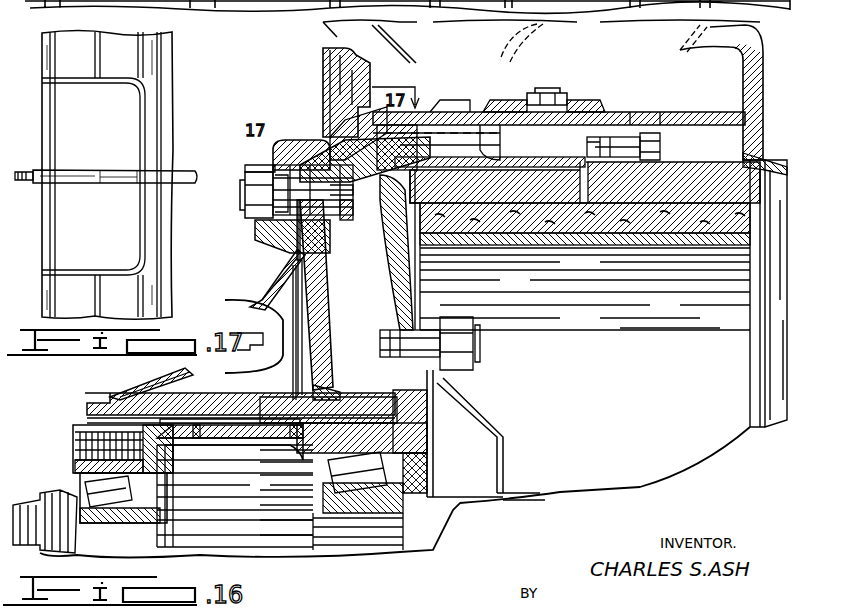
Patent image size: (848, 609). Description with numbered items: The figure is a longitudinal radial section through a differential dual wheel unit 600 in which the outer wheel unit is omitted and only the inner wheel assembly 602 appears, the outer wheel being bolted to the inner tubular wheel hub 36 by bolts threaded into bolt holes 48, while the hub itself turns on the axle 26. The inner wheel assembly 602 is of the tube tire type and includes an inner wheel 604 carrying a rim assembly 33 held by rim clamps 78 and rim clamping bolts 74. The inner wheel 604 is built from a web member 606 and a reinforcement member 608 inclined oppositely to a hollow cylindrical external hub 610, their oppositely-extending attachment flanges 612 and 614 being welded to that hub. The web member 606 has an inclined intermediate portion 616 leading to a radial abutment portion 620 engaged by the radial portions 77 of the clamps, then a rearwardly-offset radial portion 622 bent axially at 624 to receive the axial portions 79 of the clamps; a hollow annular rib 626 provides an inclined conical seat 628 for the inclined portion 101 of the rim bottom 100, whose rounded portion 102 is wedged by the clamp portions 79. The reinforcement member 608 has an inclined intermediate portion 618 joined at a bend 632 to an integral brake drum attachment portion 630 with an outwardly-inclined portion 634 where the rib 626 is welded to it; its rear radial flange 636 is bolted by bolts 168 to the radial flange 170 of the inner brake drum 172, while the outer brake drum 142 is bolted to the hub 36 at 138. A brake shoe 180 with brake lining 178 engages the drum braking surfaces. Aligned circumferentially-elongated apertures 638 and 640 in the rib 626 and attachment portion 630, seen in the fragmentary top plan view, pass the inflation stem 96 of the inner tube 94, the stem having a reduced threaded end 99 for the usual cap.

In FIG. 17, the circumferentially-elongated aperture 640 is at (55, 97).
In FIG. 17, the circumferentially-elongated aperture 638 is at (48, 119).
In FIG. 17, the externally-threaded end 99 is at (30, 168).
In FIG. 17, the inflation stem 96 is at (178, 170).
In FIG. 16, the inflation stem 96 is at (545, 90).
In FIG. 16, the differential dual wheel unit 600 is at (260, 94).
In FIG. 16, the inner wheel assembly 602 is at (238, 139).
In FIG. 16, the axially bent portion 624 is at (280, 87).
In FIG. 16, the rounded portion 102 is at (345, 97).
In FIG. 16, the inclined portion 101 is at (380, 100).
In FIG. 16, the axial portion 79 is at (313, 168).
In FIG. 16, the rim clamp 78 is at (252, 154).
In FIG. 16, the rim clamping bolt 74 is at (245, 195).
In FIG. 16, the rearwardly-offset radial portion 622 is at (258, 222).
In FIG. 16, the radial portion 77 is at (255, 238).
In FIG. 16, the inner wheel 604 is at (256, 280).
In FIG. 16, the web member 606 is at (256, 294).
In FIG. 16, the inclined intermediate portion 616 is at (258, 305).
In FIG. 16, the attachment flange 612 is at (137, 388).
In FIG. 16, the bolt hole 48 is at (78, 450).
In FIG. 16, the inner tubular wheel hub 36 is at (160, 458).
In FIG. 16, the external hub 610 is at (243, 397).
In FIG. 16, the axle 26 is at (289, 560).
In FIG. 16, the bend 632 is at (340, 188).
In FIG. 16, the outer brake drum 142 is at (300, 255).
In FIG. 16, the radial abutment portion 620 is at (315, 265).
In FIG. 16, the reinforcement member 608 is at (355, 290).
In FIG. 16, the inclined intermediate portion 618 is at (320, 325).
In FIG. 16, the attachment flange 614 is at (337, 393).
In FIG. 16, the bolt 138 is at (472, 352).
In FIG. 16, the inclined conical seat 628 is at (450, 248).
In FIG. 16, the outwardly-inclined portion 634 is at (503, 245).
In FIG. 16, the brake shoe 180 is at (600, 248).
In FIG. 16, the brake lining 178 is at (680, 248).
In FIG. 16, the inner tube 94 is at (410, 63).
In FIG. 16, the hollow annular rib 626 is at (442, 98).
In FIG. 16, the rim bottom 100 is at (492, 88).
In FIG. 16, the inner rim assembly 33 is at (548, 100).
In FIG. 16, the brake drum attachment portion 630 is at (598, 110).
In FIG. 16, the outwardly-directed radial flange 636 is at (620, 135).
In FIG. 16, the radial flange 170 is at (642, 110).
In FIG. 16, the bolt 168 is at (668, 125).
In FIG. 16, the inner brake drum 172 is at (694, 152).